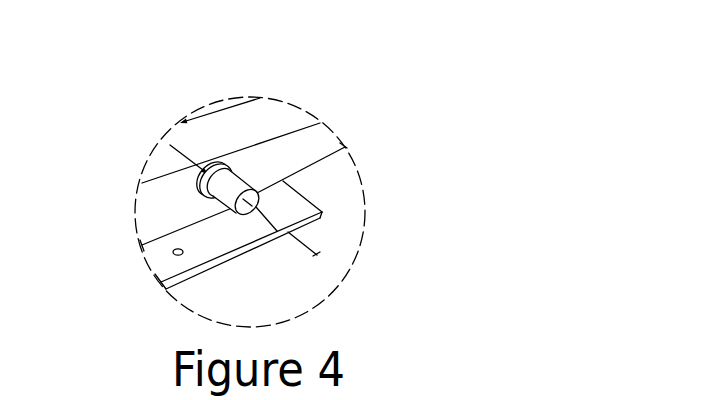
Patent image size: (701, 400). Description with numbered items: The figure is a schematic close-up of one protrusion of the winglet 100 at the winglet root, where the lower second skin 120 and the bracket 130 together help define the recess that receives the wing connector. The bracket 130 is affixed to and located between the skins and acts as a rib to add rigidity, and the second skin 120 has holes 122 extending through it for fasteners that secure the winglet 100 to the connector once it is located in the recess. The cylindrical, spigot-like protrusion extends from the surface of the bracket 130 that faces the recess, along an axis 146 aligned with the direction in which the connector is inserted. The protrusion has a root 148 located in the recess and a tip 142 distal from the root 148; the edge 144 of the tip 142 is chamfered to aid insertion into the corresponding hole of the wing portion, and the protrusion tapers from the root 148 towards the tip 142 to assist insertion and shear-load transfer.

The winglet 100 is at (439, 114).
The second skin 120 is at (155, 275).
The holes 122 is at (182, 256).
The bracket 130 is at (303, 145).
The tip 142 is at (323, 213).
The edge 144 is at (237, 214).
The axis 146 is at (319, 255).
The root 148 is at (234, 164).